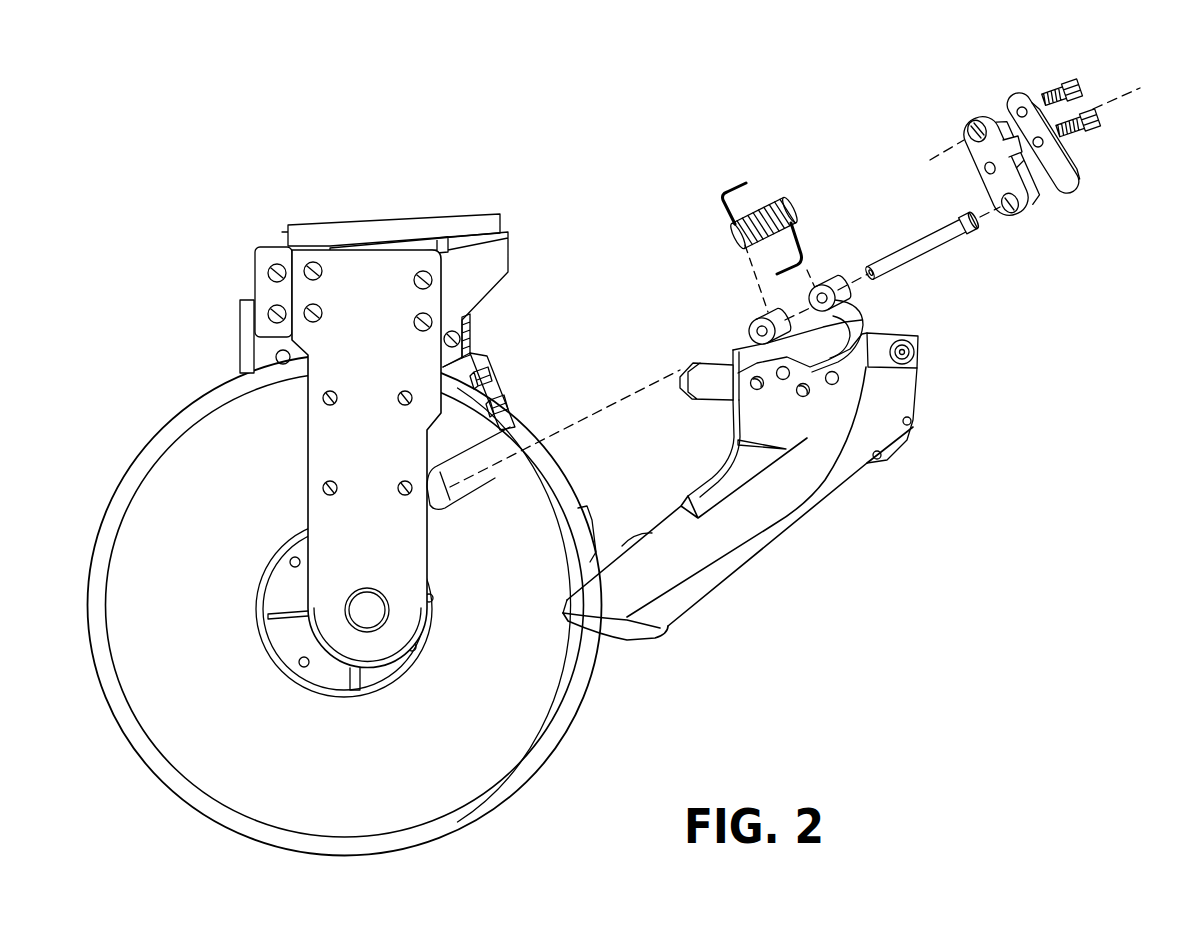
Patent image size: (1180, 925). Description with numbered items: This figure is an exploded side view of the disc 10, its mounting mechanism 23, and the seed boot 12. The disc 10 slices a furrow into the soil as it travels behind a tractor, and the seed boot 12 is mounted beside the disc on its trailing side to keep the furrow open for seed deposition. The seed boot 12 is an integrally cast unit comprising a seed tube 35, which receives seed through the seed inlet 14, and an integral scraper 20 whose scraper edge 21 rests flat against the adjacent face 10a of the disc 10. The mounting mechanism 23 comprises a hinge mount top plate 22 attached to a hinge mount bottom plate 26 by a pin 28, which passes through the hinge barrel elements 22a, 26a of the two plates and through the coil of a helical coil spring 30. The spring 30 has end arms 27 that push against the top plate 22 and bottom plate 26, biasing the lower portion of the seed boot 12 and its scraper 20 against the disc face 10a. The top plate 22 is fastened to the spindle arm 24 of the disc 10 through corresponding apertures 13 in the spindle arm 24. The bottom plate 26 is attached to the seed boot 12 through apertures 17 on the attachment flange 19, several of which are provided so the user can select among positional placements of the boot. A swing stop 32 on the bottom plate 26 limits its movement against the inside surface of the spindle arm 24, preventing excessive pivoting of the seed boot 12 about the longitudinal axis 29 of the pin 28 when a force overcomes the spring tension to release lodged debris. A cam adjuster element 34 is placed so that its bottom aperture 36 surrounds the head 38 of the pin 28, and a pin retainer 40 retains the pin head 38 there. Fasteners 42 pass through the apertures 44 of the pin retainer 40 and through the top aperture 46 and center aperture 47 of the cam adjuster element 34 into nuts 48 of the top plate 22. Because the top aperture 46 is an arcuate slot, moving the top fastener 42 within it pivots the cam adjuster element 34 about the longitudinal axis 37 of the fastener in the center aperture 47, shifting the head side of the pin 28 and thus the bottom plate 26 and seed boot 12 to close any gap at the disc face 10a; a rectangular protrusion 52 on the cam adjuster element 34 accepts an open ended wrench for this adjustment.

The disc 10 is at (210, 457).
The face 10a is at (489, 699).
The seed boot 12 is at (776, 485).
The apertures 13 is at (338, 405).
The seed inlet 14 is at (919, 334).
The apertures 17 is at (781, 390).
The attachment flange 19 is at (838, 366).
The scraper 20 is at (680, 596).
The scraper edge 21 is at (662, 628).
The hinge mount top plate 22 is at (480, 360).
The hinge barrel element 22a is at (452, 505).
The mounting mechanism 23 is at (769, 135).
The spindle arm 24 is at (337, 345).
The hinge mount bottom plate 26 is at (857, 310).
The hinge barrel elements 26a is at (752, 320).
The end arms 27 is at (742, 257).
The pin 28 is at (905, 254).
The longitudinal axis 29 is at (590, 418).
The helical coil spring 30 is at (763, 210).
The swing stop 32 is at (710, 388).
The cam adjuster element 34 is at (984, 204).
The seed tube 35 is at (825, 470).
The bottom aperture 36 is at (1007, 220).
The longitudinal axis 37 is at (1137, 93).
The head 38 is at (965, 214).
The pin retainer 40 is at (1032, 145).
The fasteners 42 is at (1100, 112).
The apertures 44 is at (1016, 107).
The top aperture 46 is at (965, 128).
The center aperture 47 is at (985, 172).
The nuts 48 is at (487, 372).
The protrusion 52 is at (1013, 162).